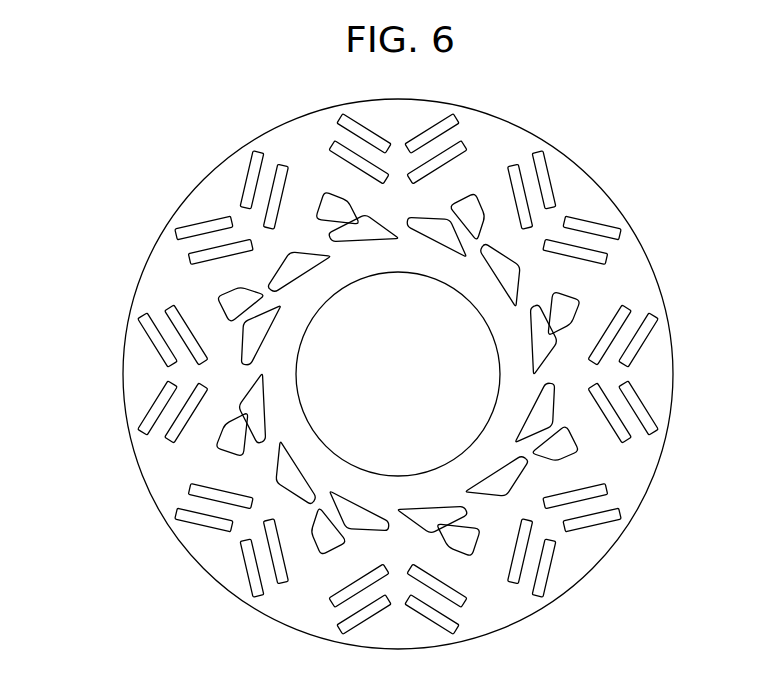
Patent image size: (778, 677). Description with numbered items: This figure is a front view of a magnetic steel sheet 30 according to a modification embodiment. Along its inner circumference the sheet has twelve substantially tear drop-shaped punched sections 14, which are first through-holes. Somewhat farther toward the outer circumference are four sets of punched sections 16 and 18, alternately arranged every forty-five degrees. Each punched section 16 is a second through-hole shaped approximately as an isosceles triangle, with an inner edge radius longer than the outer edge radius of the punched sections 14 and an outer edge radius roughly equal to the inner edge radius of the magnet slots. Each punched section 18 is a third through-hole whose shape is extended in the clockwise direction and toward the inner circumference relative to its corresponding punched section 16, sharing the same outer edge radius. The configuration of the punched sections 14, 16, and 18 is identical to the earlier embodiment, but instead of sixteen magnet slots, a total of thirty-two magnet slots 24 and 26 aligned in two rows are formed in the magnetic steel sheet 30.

The magnetic steel sheet 30 is at (637, 142).
The punched section 14 is at (258, 405).
The punched section 16 is at (330, 210).
The punched section 18 is at (452, 209).
The magnet slot 24 is at (183, 392).
The magnet slot 26 is at (183, 338).